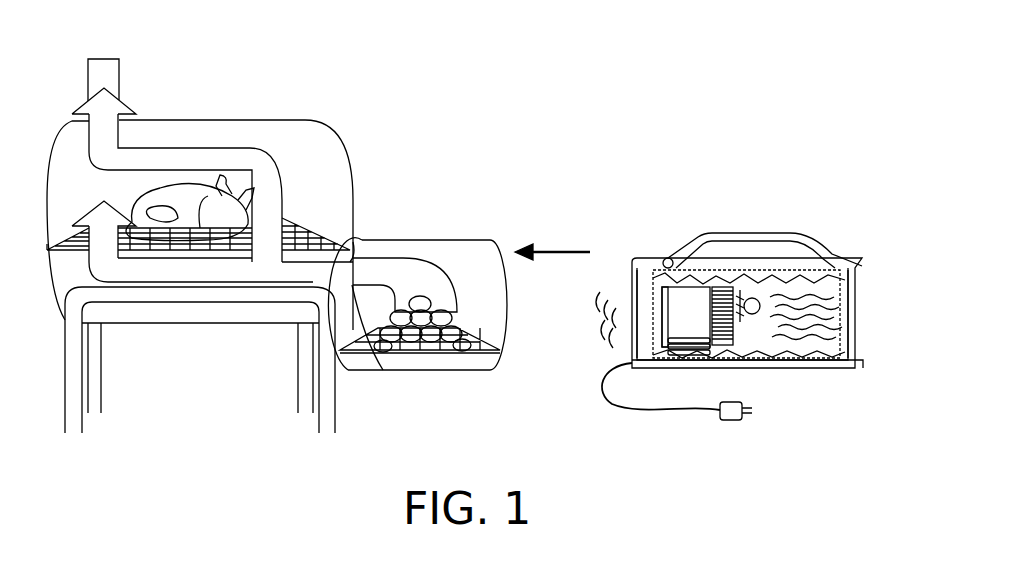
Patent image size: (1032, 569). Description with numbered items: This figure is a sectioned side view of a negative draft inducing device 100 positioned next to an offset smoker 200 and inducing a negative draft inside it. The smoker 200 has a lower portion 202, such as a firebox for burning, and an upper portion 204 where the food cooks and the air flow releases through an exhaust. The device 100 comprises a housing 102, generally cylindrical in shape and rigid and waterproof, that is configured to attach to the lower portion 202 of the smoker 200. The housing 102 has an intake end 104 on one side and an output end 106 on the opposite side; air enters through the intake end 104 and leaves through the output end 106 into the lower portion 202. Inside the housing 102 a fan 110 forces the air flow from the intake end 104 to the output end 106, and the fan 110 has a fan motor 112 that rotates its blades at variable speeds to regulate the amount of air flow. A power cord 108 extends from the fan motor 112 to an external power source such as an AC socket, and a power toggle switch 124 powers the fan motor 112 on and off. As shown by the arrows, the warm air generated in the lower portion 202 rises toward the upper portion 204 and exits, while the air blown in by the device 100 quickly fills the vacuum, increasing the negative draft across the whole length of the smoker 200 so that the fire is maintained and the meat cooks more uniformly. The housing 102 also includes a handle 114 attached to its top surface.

The negative draft inducing device 100 is at (728, 175).
The housing 102 is at (773, 370).
The intake end 104 is at (858, 282).
The output end 106 is at (630, 272).
The power cord 108 is at (735, 421).
The fan 110 is at (745, 358).
The fan motor 112 is at (672, 310).
The handle 114 is at (795, 237).
The power toggle switch 124 is at (668, 257).
The smoker 200 is at (360, 98).
The lower portion 202 is at (440, 240).
The upper portion 204 is at (177, 120).